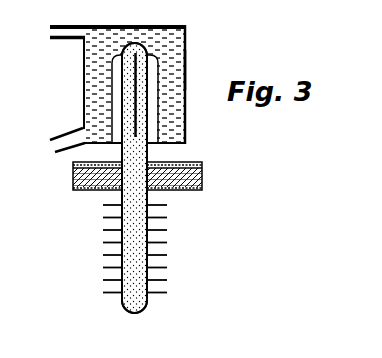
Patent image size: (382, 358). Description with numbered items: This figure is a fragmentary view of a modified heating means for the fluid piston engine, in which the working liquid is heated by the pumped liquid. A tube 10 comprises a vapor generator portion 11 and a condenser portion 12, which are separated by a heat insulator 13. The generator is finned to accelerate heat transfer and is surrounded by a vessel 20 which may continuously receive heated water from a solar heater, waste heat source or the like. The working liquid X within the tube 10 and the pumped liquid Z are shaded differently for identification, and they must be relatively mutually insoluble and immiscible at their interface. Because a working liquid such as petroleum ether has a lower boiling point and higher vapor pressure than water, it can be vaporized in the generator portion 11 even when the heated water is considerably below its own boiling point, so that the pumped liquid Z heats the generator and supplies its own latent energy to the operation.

The vessel 20 is at (83, 57).
The vapor generator portion 11 is at (146, 52).
The tube 10 is at (150, 196).
The condenser portion 12 is at (147, 302).
The heat insulator 13 is at (85, 191).
The pumped liquid Z is at (186, 68).
The working liquid X is at (127, 297).